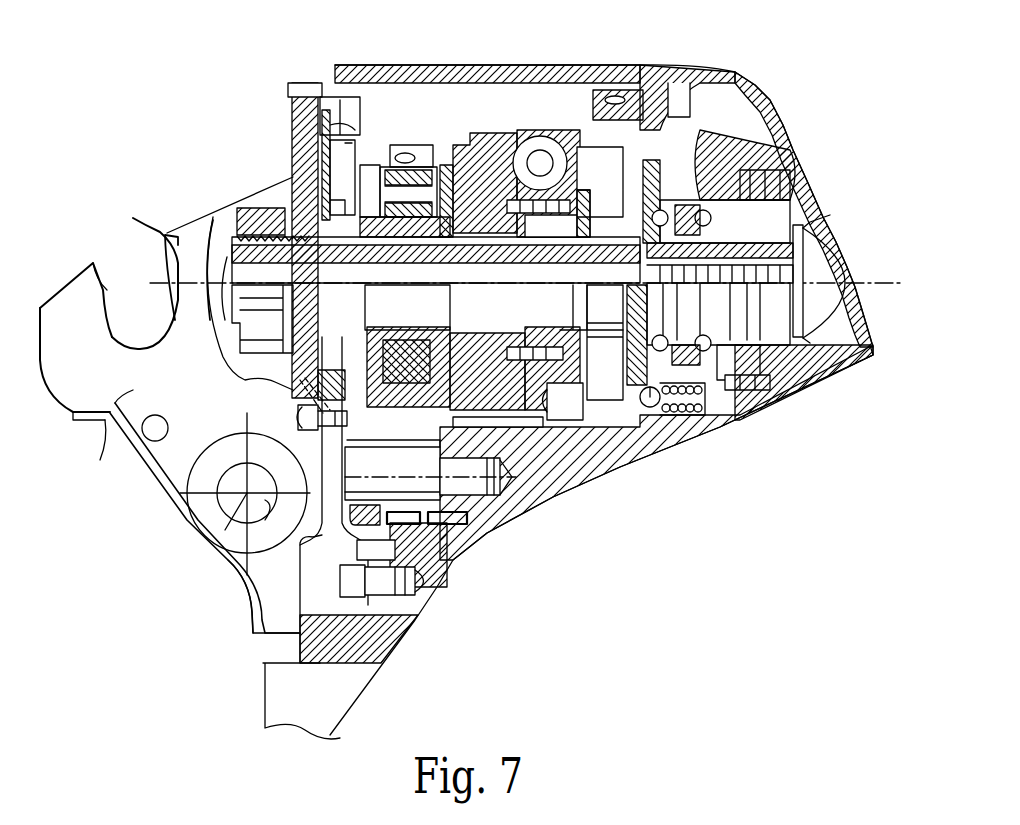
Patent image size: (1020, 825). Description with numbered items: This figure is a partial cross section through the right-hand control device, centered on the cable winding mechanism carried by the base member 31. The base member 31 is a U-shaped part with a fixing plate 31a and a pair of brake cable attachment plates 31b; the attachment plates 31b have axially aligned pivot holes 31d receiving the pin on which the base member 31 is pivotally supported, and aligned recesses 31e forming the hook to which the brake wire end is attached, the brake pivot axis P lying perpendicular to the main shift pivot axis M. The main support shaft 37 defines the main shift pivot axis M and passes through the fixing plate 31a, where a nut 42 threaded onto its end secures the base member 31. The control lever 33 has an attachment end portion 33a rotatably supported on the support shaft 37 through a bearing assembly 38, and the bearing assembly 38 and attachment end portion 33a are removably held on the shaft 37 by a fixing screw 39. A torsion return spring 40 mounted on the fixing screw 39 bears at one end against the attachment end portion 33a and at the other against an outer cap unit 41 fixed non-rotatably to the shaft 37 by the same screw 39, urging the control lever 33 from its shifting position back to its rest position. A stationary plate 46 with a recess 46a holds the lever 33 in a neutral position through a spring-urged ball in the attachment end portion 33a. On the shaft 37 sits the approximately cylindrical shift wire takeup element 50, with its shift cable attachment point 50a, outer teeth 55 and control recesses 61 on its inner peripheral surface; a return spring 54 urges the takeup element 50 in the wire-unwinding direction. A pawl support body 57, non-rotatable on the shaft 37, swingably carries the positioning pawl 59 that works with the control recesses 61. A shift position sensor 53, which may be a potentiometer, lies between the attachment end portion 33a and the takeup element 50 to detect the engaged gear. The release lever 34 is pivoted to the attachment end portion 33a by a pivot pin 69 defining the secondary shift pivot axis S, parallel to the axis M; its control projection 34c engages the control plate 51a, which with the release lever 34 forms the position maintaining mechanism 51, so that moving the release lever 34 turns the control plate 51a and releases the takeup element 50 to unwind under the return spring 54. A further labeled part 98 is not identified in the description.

The base member 31 is at (138, 478).
The fixing portion or plate 31a is at (292, 140).
The brake cable attachment portions or plates 31b is at (108, 440).
The pivot holes 31d is at (247, 557).
The recesses 31e is at (103, 295).
The control (brake/shift) lever 33 is at (380, 680).
The attachment end portion 33a is at (703, 130).
The release (shifting) lever 34 is at (470, 560).
The control projection 34c is at (293, 392).
The main support member or shaft 37 is at (543, 157).
The bearing assembly 38 is at (720, 395).
The fixing screw 39 is at (818, 345).
The torsion return spring or biasing element 40 is at (795, 397).
The outer cap unit 41 is at (790, 190).
The nut 42 is at (260, 192).
The stationary plate 46 is at (653, 430).
The recess 46a is at (703, 420).
The shift wire takeup element 50 is at (470, 123).
The shift cable attachment point 50a is at (562, 128).
The position maintaining mechanism 51 is at (296, 418).
The control or release plate 51a is at (345, 100).
The shift position sensor 53 is at (598, 428).
The return spring or biasing element 54 is at (556, 427).
The teeth or driven portions 55 is at (522, 428).
The pawl support body 57 is at (420, 187).
The positioning pawl 59 is at (413, 160).
The control recesses 61 is at (387, 150).
The pivot pin 69 is at (430, 585).
The retainer 98 is at (705, 413).
The main shift pivot axis M is at (168, 300).
The brake pivot axis P is at (230, 547).
The secondary shift pivot axis S is at (455, 478).